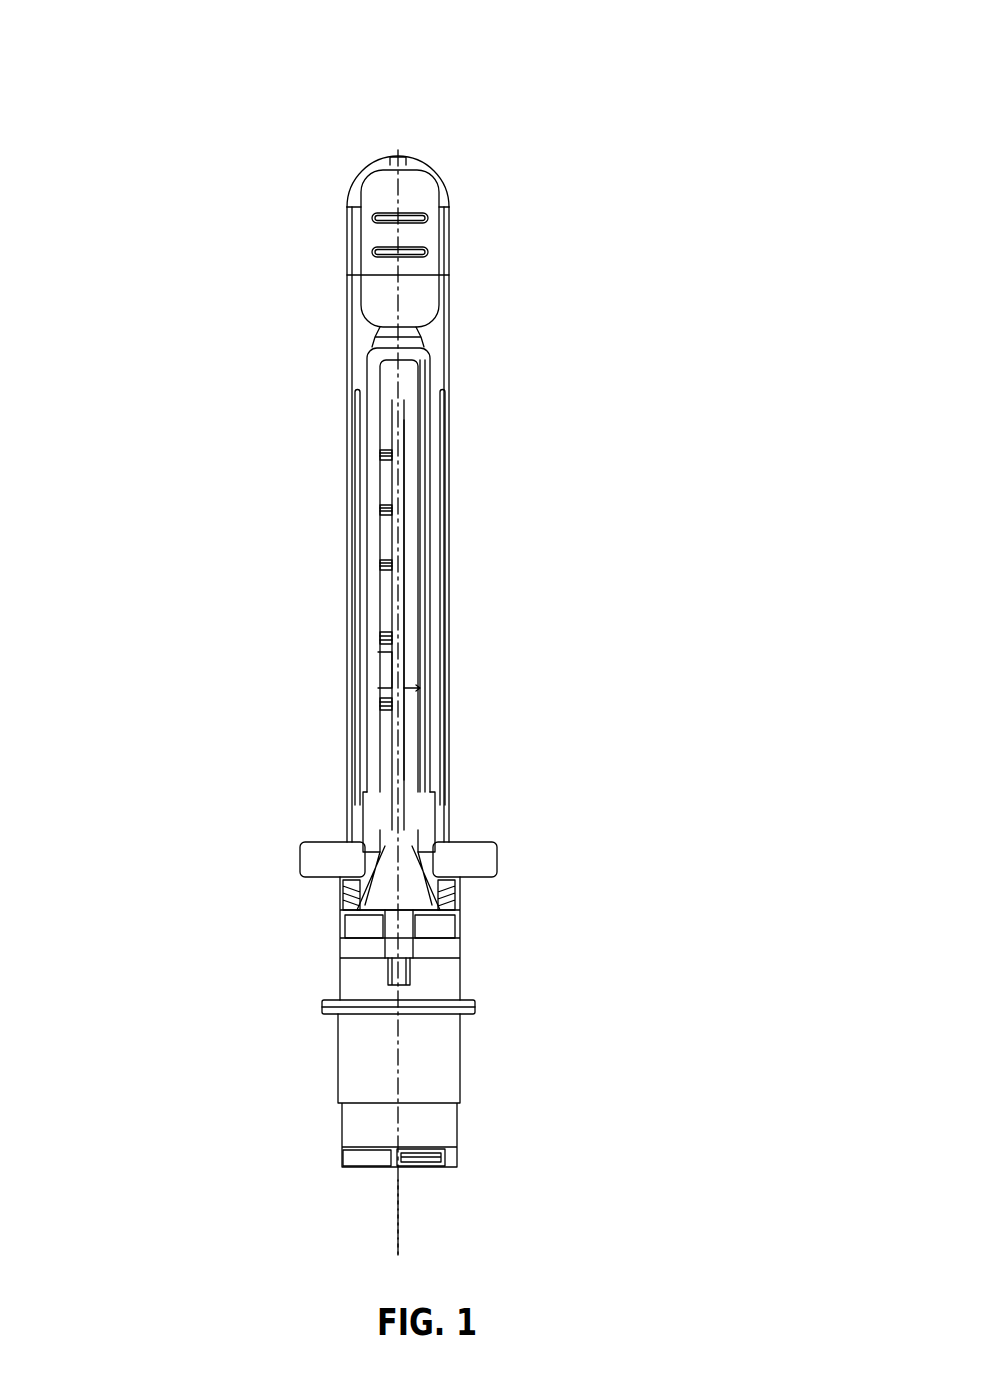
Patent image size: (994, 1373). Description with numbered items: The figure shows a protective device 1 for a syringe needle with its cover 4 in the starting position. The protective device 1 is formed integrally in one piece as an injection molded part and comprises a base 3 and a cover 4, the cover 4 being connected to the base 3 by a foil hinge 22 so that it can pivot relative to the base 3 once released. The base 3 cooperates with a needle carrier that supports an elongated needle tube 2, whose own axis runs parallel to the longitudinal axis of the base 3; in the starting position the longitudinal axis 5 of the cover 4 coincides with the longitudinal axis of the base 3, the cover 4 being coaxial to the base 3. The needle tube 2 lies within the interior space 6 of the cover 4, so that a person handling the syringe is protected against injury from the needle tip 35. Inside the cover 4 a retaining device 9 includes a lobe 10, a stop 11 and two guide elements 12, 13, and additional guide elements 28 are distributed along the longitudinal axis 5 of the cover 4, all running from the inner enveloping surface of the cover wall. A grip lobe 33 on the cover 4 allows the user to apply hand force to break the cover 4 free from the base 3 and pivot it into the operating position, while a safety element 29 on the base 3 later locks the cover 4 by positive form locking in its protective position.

The protective device 1 is at (487, 251).
The needle tube 2 is at (410, 457).
The base 3 is at (464, 1058).
The cover 4 is at (442, 356).
The longitudinal axis 5 is at (398, 1210).
The interior space 6 is at (410, 562).
The retaining device 9 is at (420, 640).
The lobe 10 is at (410, 672).
The stop 11 is at (382, 670).
The guide element 12 is at (382, 705).
The guide element 13 is at (382, 635).
The foil hinge 22 is at (342, 893).
The additional guide elements 28 is at (385, 566).
The safety element 29 is at (412, 890).
The grip lobe 33 is at (387, 200).
The needle tip 35 is at (402, 402).